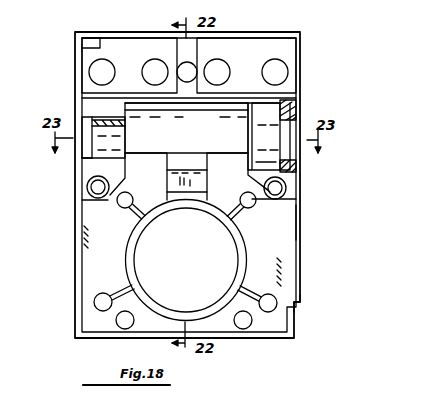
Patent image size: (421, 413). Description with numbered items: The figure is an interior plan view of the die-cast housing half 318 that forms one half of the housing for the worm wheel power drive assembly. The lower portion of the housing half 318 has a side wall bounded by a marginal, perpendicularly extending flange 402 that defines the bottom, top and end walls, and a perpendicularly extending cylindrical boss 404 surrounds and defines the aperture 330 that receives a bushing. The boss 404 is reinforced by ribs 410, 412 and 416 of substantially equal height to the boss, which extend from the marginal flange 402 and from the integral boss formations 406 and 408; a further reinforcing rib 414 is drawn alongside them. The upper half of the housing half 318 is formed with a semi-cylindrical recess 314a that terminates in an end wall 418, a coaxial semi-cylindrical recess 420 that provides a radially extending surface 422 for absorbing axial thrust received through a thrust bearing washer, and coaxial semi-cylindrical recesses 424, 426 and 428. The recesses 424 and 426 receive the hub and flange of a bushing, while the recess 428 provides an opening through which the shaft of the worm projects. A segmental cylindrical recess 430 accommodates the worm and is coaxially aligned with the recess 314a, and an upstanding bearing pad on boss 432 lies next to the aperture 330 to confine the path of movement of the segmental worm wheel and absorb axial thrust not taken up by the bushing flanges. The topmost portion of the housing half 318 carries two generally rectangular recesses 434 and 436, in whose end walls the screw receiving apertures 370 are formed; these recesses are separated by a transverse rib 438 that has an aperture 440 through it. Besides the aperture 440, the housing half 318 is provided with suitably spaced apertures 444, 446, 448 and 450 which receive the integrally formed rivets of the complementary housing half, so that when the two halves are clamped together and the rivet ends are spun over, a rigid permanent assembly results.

The rectangular recess 436 is at (84, 47).
The screw receiving apertures 370 is at (142, 70).
The transverse rib 438 is at (182, 47).
The aperture 440 is at (195, 63).
The semi-cylindrical recess 424 is at (260, 108).
The rectangular recess 434 is at (296, 44).
The end wall 418 is at (94, 118).
The radially extending surface 422 is at (242, 107).
The segmental cylindrical recess 430 is at (175, 131).
The semi-cylindrical recess 420 is at (250, 127).
The semi-cylindrical recess 428 is at (293, 114).
The semi-cylindrical recess 314a is at (84, 158).
The aperture 444 is at (90, 188).
The integral boss formation 406 is at (92, 198).
The bearing pad on boss 432 is at (172, 178).
The aperture 450 is at (256, 189).
The semi-cylindrical recess 426 is at (294, 166).
The integral boss formation 408 is at (297, 192).
The housing half 318 is at (298, 222).
The rib 416 is at (129, 217).
The upper right arm 414 is at (239, 222).
The cylindrical boss 404 is at (128, 254).
The aperture 330 is at (245, 242).
The rib 410 is at (134, 284).
The rib 412 is at (254, 292).
The marginal flange 402 is at (299, 315).
The aperture 446 is at (118, 325).
The aperture 448 is at (245, 329).